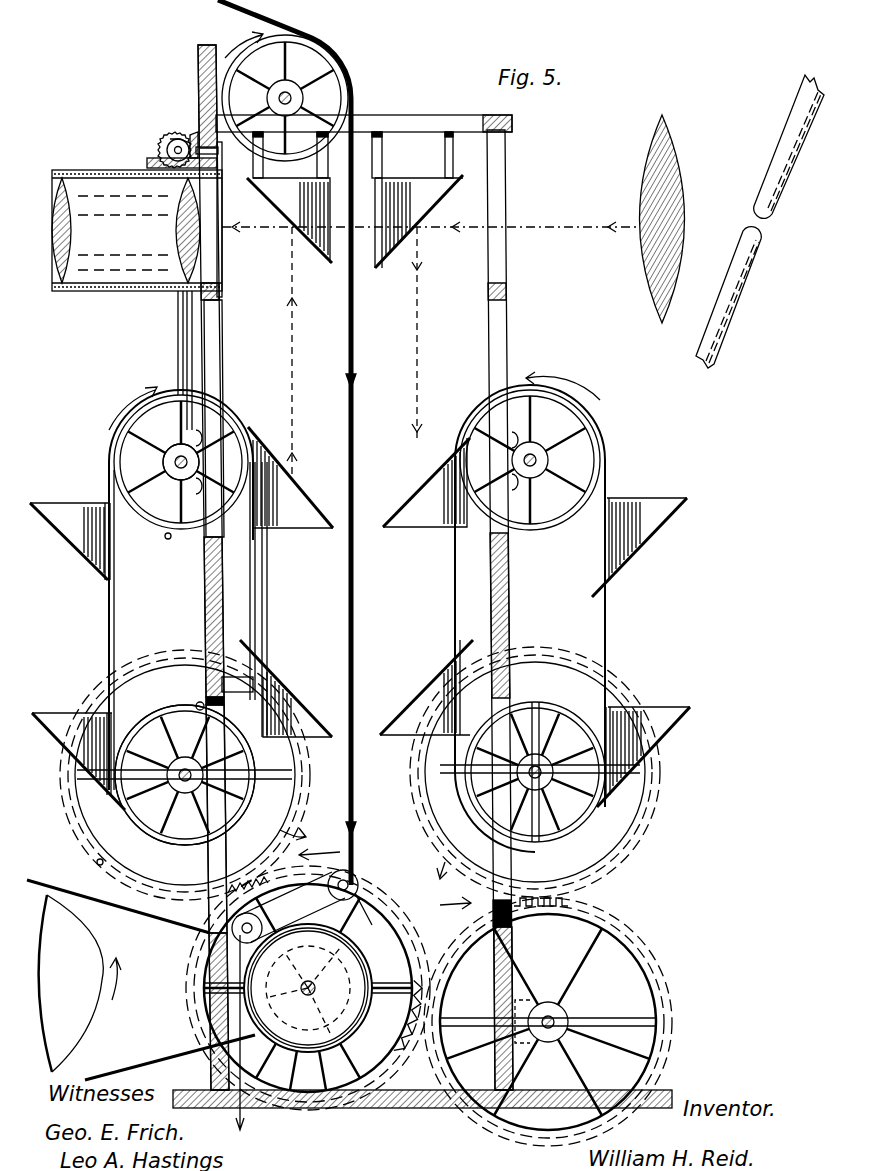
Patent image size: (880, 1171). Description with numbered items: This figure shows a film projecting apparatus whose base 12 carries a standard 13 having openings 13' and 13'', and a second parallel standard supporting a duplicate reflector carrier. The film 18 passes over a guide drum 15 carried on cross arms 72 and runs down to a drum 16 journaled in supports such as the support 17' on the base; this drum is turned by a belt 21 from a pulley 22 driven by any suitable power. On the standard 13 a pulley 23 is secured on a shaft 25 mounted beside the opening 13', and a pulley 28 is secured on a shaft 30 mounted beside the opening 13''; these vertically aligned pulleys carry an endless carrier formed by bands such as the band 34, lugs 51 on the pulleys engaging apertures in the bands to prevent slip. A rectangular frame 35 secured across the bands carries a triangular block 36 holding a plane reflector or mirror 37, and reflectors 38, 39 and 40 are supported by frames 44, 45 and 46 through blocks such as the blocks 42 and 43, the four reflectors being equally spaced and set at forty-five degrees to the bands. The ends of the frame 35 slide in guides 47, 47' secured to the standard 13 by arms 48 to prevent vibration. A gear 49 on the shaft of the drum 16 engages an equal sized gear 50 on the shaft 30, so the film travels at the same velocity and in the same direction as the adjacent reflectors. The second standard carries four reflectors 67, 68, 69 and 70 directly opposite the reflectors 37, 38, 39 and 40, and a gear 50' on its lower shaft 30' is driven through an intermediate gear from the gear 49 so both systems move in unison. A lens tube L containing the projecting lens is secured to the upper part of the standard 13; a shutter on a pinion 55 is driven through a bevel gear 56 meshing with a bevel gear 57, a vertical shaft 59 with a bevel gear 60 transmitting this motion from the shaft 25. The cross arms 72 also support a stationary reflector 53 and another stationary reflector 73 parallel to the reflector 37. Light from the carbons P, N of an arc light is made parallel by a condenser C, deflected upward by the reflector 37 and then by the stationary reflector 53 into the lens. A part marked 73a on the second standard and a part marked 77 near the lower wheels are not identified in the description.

The base 12 is at (400, 1108).
The standard 13 is at (191, 567).
The opening 13' is at (237, 418).
The opening 13'' is at (197, 819).
The guide drum 15 is at (330, 58).
The drum 16 is at (317, 988).
The support 17' is at (308, 1018).
The film 18 is at (352, 622).
The belt 21 is at (140, 1064).
The pulley 22 is at (88, 962).
The pulley 23 is at (227, 417).
The shaft 25 is at (181, 470).
The pulley 28 is at (147, 827).
The shaft 30 is at (184, 762).
The lower shaft 30' is at (548, 906).
The band 34 is at (108, 612).
The rectangular frame 35 is at (262, 463).
The triangular block 36 is at (278, 483).
The reflector 37 is at (298, 483).
The reflector 38 is at (60, 543).
The reflector 39 is at (55, 740).
The reflector 40 is at (308, 707).
The block 42 is at (72, 705).
The block 43 is at (312, 735).
The rectangular frame 44 is at (110, 560).
The rectangular frame 45 is at (125, 751).
The rectangular frame 46 is at (267, 671).
The guide 47 is at (70, 496).
The guide 47' is at (291, 599).
The arms 48 is at (258, 566).
The gear 49 is at (390, 922).
The gear 50 is at (175, 775).
The gear 50' is at (555, 772).
The lugs 51 is at (169, 540).
The stationary reflector 53 is at (323, 266).
The pinion 55 is at (193, 140).
The bevel gear 56 is at (178, 139).
The bevel gear 57 is at (167, 144).
The vertical shaft 59 is at (182, 320).
The bevel gear 60 is at (147, 163).
The reflector 67 is at (433, 467).
The reflector 68 is at (678, 500).
The reflector 69 is at (660, 743).
The reflector 70 is at (435, 683).
The cross arms 72 is at (410, 123).
The stationary reflector 73 is at (425, 228).
The post block 73a is at (507, 292).
The gear ring 77 is at (648, 972).
The condenser C is at (673, 152).
The carbon P is at (790, 150).
The carbon N is at (742, 307).
The lens tube L is at (137, 219).